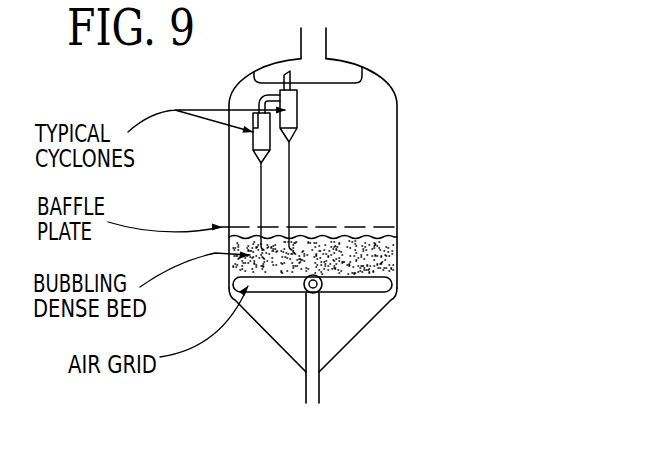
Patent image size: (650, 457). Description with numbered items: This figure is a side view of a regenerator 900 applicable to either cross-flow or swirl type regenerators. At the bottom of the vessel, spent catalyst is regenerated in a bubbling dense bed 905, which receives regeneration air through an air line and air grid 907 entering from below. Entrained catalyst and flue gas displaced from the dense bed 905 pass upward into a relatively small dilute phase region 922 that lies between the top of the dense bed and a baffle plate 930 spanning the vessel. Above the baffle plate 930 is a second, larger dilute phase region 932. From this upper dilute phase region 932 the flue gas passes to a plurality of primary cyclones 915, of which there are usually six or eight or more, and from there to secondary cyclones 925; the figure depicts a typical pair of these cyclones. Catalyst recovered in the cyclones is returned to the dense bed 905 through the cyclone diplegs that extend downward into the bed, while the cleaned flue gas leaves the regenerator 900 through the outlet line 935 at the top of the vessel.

The fluidized bed reactor vessel 900 is at (397, 152).
The line 935 is at (327, 50).
The secondary cyclones 925 is at (298, 104).
The primary cyclones 915 is at (253, 147).
The dilute phase region 932 is at (354, 187).
The baffle plate 930 is at (375, 226).
The dilute phase region 922 is at (397, 231).
The bubbling dense bed 905 is at (378, 257).
The air line and air grid 907 is at (321, 337).